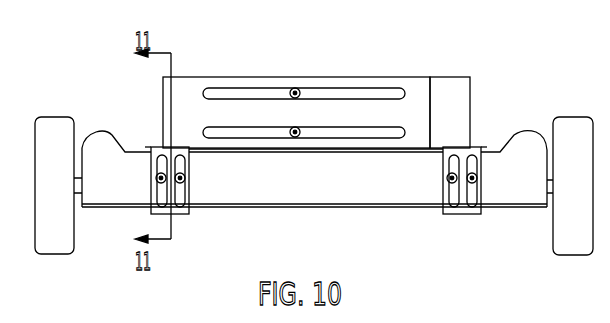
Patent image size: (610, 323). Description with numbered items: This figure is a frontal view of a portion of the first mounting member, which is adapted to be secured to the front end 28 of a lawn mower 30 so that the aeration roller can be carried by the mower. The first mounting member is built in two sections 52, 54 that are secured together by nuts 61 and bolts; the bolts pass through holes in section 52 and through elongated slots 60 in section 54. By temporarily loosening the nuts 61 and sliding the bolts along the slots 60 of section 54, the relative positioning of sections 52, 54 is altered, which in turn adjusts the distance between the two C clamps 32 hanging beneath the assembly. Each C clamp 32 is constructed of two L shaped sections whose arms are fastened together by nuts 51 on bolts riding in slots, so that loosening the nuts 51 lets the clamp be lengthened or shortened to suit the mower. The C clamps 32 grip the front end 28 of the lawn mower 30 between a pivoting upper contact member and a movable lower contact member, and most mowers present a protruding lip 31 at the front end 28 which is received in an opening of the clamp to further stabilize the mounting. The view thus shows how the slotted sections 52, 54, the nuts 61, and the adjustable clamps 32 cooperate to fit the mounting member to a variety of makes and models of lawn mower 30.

The front end 28 is at (326, 180).
The lawn mower 30 is at (287, 187).
The lip 31 is at (321, 206).
The C clamps 32 is at (173, 198).
The nuts 51 is at (161, 178).
The section 52 is at (452, 94).
The section 54 is at (191, 96).
The slots 60 is at (357, 132).
The nuts 61 is at (291, 129).